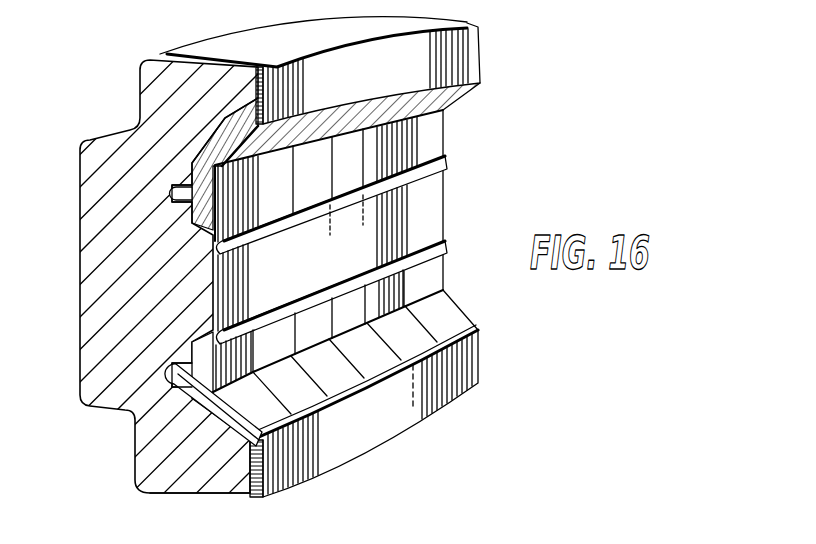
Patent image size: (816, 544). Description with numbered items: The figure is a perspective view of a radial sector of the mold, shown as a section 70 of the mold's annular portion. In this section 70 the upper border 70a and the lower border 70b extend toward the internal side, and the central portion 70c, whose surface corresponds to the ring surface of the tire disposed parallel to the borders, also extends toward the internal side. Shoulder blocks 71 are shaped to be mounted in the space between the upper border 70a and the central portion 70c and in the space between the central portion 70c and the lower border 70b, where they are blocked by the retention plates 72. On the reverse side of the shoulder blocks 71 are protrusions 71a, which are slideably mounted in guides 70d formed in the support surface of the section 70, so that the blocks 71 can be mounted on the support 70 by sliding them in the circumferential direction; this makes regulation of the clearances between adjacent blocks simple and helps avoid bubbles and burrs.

The section of the annular portion of the mold 70 is at (80, 268).
The upper border 70a is at (228, 92).
The lower border 70b is at (210, 458).
The central portion 70c is at (430, 203).
The guide 70d is at (163, 201).
The shoulder block 71 is at (223, 140).
The protrusion 71a is at (183, 182).
The retention plate 72 is at (467, 47).